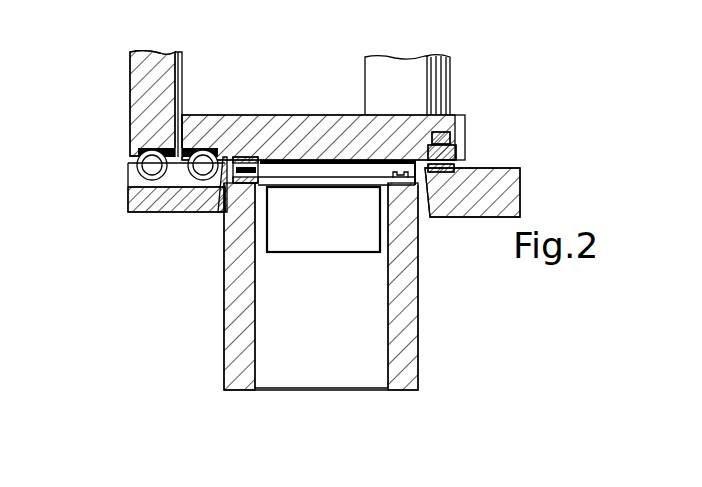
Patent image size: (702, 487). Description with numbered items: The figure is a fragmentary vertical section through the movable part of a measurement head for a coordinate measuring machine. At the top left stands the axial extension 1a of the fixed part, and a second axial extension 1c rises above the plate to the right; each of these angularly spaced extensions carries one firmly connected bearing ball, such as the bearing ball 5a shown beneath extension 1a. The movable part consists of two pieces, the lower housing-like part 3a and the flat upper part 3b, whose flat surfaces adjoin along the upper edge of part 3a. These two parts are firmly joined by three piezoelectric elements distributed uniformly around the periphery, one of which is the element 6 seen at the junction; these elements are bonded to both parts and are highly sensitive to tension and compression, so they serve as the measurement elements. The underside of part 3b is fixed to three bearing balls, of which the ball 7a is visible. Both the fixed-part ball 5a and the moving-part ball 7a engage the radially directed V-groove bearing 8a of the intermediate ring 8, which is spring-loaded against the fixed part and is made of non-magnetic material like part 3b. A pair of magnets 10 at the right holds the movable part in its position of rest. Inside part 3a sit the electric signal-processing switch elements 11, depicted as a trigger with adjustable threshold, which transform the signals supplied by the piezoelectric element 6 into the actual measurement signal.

The axial extension 1a is at (130, 80).
The axial extension 1c is at (381, 79).
The part of the movable part 3a is at (418, 313).
The part of the movable part 3b is at (278, 113).
The bearing ball 5a is at (146, 159).
The piezoelectric element 6 is at (242, 198).
The bearing ball 7a is at (197, 170).
The intermediate ring 8 is at (470, 205).
The V-groove bearing 8a is at (128, 178).
The magnets 10 is at (466, 152).
The signal-processing switch elements 11 is at (297, 253).